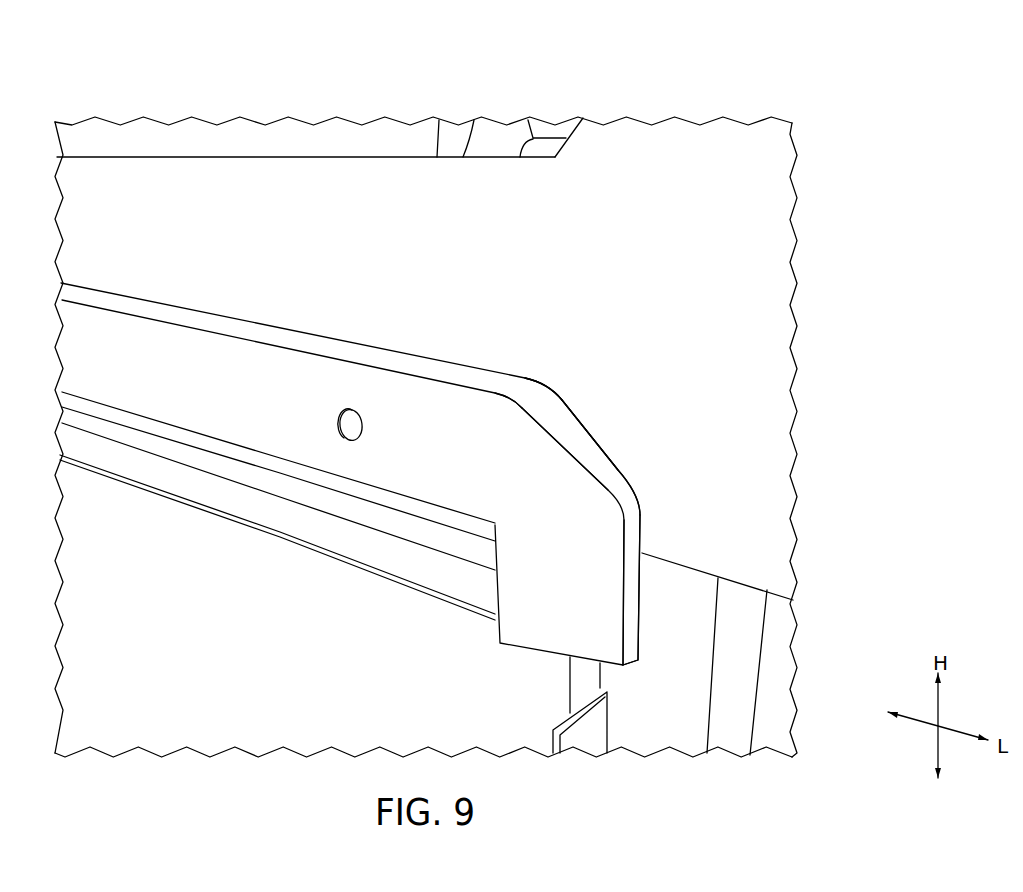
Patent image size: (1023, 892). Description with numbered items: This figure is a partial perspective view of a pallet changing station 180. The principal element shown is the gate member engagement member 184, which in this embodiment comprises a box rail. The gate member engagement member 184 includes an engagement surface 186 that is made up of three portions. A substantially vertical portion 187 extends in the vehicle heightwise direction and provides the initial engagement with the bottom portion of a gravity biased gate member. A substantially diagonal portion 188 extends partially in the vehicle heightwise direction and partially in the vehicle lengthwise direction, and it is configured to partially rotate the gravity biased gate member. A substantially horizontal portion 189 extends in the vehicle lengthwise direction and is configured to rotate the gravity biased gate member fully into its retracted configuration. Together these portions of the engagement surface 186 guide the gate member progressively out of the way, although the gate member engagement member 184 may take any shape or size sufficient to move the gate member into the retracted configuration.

The pallet changing station 180 is at (425, 392).
The gate member engagement member 184 is at (143, 352).
The engagement surface 186 is at (582, 425).
The substantially vertical portion 187 is at (633, 617).
The substantially diagonal portion 188 is at (558, 428).
The substantially horizontal portion 189 is at (452, 372).